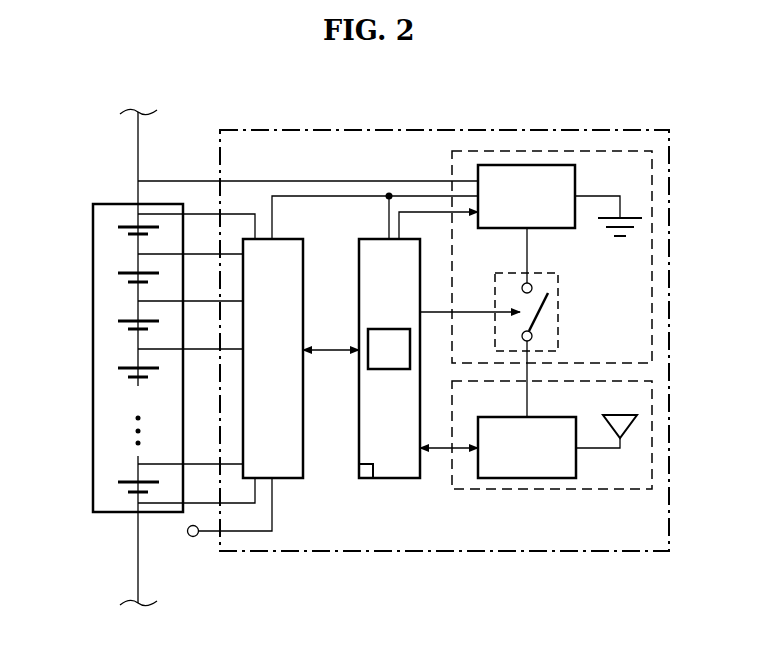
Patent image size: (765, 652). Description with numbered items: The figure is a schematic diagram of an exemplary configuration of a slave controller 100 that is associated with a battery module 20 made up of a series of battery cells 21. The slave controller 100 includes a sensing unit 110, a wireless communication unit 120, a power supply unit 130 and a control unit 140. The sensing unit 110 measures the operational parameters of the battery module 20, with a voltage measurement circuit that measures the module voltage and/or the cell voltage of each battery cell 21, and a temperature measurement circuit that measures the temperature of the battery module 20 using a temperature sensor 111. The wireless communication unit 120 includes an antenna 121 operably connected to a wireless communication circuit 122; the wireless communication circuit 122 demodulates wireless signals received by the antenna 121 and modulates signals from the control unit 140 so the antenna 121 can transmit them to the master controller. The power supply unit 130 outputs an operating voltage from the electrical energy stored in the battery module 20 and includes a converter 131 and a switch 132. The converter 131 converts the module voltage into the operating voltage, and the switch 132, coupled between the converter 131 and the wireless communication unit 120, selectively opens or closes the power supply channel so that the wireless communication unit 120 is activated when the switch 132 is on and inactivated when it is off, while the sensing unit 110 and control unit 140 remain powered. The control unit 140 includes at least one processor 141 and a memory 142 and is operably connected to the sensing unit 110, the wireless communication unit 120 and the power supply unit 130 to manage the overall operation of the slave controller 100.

The battery module 20 is at (93, 257).
The battery cell 21 is at (128, 283).
The slave controller 100 is at (612, 128).
The sensing unit 110 is at (287, 480).
The temperature sensor 111 is at (191, 538).
The wireless communication unit 120 is at (568, 490).
The antenna 121 is at (629, 414).
The wireless communication circuit 122 is at (518, 416).
The power supply unit 130 is at (452, 160).
The converter 131 is at (518, 231).
The switch 132 is at (559, 303).
The control unit 140 is at (410, 480).
The processor 141 is at (380, 370).
The memory 142 is at (364, 480).